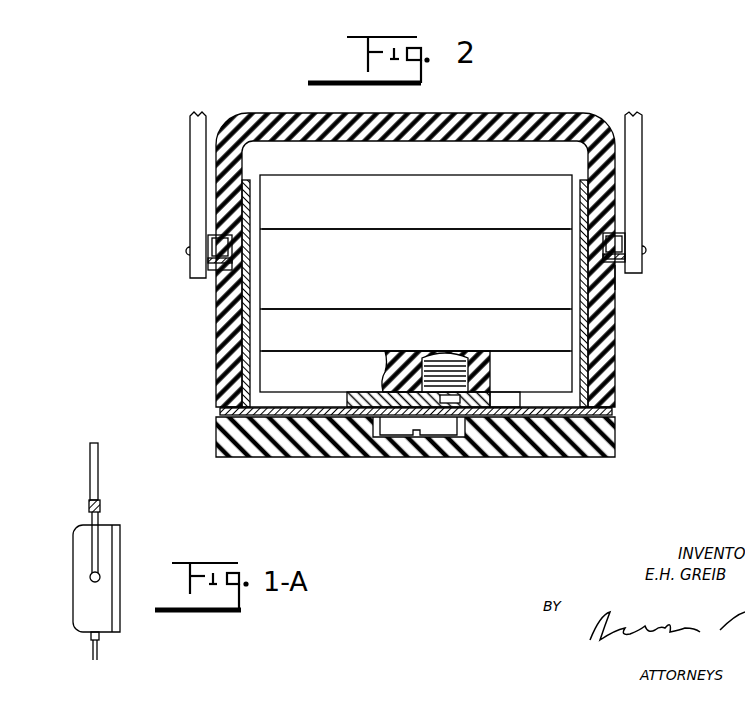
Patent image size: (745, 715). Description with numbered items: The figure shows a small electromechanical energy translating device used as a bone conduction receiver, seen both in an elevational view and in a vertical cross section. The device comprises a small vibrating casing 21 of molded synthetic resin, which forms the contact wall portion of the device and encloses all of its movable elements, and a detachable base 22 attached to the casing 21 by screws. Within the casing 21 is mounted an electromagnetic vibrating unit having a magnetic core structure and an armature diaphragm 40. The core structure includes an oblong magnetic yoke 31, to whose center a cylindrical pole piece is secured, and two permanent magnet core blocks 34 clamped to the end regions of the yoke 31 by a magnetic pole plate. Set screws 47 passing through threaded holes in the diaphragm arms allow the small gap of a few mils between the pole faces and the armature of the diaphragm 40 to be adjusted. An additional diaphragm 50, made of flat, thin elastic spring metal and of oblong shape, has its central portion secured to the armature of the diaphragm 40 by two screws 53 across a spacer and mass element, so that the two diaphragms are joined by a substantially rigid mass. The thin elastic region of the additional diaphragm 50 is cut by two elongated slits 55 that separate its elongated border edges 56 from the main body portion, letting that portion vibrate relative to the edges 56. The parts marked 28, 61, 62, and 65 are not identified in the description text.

In FIG. 2, the vibrating casing 21 is at (526, 126).
In FIG. 1-A, the vibrating casing 21 is at (80, 567).
In FIG. 2, the detachable base 22 is at (616, 446).
In FIG. 1-A, the detachable base 22 is at (115, 551).
In FIG. 2, the housing lower wall 28 is at (616, 280).
In FIG. 2, the magnetic yoke 31 is at (480, 186).
In FIG. 2, the permanent magnet core block 34 is at (378, 237).
In FIG. 2, the armature diaphragm 40 is at (330, 365).
In FIG. 2, the set screw 47 is at (430, 394).
In FIG. 2, the additional diaphragm 50 is at (320, 411).
In FIG. 2, the screw 53 is at (437, 428).
In FIG. 2, the elongated slit 55 is at (228, 382).
In FIG. 2, the elongated border edge 56 is at (226, 401).
In FIG. 2, the clamp block 61 is at (616, 246).
In FIG. 1-A, the clamp block 61 is at (97, 525).
In FIG. 2, the strip 62 is at (636, 160).
In FIG. 1-A, the strip 62 is at (98, 479).
In FIG. 1-A, the stub 65 is at (99, 652).